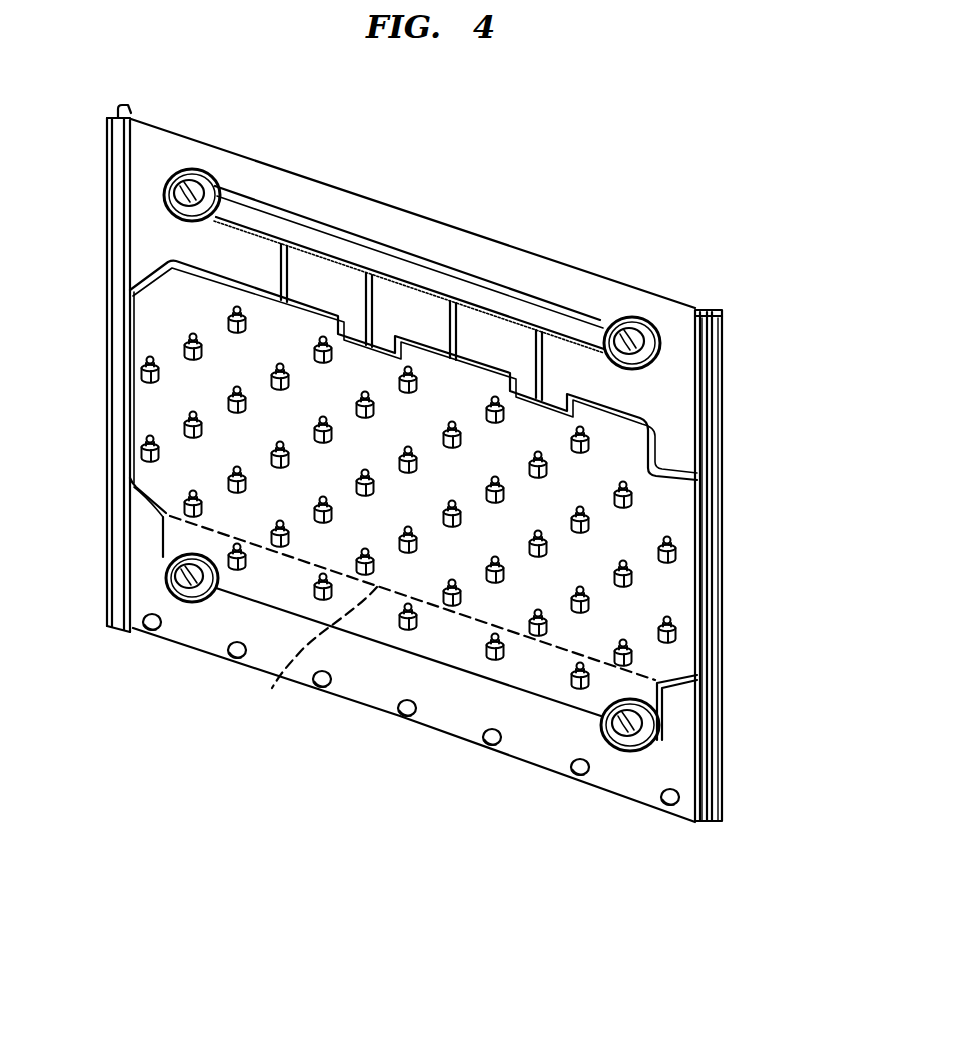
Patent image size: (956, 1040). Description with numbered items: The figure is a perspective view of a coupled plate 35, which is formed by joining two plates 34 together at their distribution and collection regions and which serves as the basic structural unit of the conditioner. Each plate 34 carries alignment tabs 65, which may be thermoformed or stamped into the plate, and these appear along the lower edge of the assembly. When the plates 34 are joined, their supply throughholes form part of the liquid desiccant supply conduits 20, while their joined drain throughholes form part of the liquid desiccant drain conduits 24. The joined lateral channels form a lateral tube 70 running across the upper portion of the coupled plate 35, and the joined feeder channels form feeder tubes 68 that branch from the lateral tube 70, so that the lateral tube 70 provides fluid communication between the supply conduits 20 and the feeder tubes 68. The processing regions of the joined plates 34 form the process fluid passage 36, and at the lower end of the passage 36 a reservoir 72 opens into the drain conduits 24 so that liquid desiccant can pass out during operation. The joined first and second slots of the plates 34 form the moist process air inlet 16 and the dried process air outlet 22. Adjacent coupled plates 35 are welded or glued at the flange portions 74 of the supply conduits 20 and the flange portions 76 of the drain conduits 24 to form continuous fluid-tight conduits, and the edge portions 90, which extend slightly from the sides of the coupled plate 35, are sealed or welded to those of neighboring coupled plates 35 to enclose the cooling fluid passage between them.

The moist process air inlet 16 is at (733, 566).
The liquid desiccant supply conduit 20 is at (204, 186).
The dried process air outlet 22 is at (108, 400).
The liquid desiccant drain conduit 24 is at (185, 577).
The plate 34 is at (728, 322).
The coupled plate 35 is at (702, 195).
The process fluid passage 36 is at (613, 463).
The alignment tab 65 is at (402, 716).
The feeder tube 68 is at (545, 388).
The lateral tube 70 is at (283, 228).
The reservoir 72 is at (278, 683).
The flange portion of liquid desiccant supply conduit 74 is at (180, 190).
The flange portion of liquid desiccant drain conduit 76 is at (193, 604).
The edge portion 90 is at (720, 804).